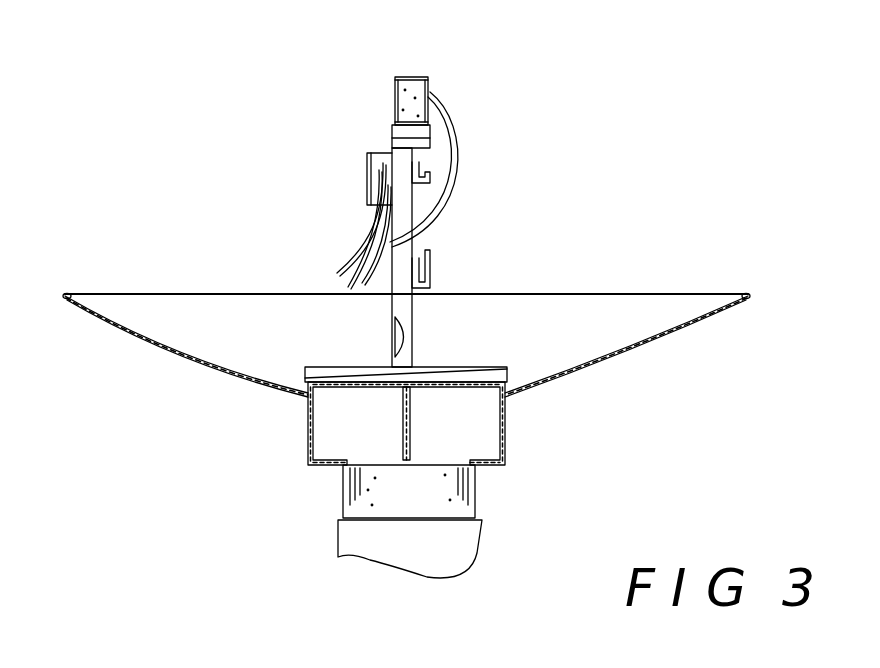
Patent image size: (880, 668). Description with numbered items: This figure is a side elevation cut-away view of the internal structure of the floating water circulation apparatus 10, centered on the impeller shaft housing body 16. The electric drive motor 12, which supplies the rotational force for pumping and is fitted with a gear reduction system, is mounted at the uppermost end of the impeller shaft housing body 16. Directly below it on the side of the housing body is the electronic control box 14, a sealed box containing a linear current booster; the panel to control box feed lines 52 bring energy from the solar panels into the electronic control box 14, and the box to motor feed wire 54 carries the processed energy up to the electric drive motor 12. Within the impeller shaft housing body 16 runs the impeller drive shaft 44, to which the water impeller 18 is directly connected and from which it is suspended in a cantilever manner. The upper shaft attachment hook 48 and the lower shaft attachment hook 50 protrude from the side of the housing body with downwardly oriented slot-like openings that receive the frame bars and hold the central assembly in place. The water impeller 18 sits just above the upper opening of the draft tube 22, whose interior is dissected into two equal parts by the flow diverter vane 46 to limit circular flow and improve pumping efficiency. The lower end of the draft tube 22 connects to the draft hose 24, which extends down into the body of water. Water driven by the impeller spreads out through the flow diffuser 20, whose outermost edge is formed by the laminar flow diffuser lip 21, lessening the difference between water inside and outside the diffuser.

The floating water circulation apparatus 10 is at (588, 449).
The electric drive motor 12 is at (432, 87).
The electronic control box 14 is at (370, 150).
The impeller shaft housing body 16 is at (405, 307).
The water impeller 18 is at (303, 380).
The flow diffuser 20 is at (167, 350).
The laminar flow diffuser lip 21 is at (77, 302).
The draft tube 22 is at (305, 447).
The draft hose 24 is at (357, 540).
The impeller drive shaft 44 is at (413, 335).
The flow diverter vane 46 is at (413, 425).
The upper shaft attachment hook 48 is at (430, 175).
The lower shaft attachment hook 50 is at (435, 258).
The panel to control box feed lines 52 is at (350, 260).
The box to motor feed wire 54 is at (447, 138).